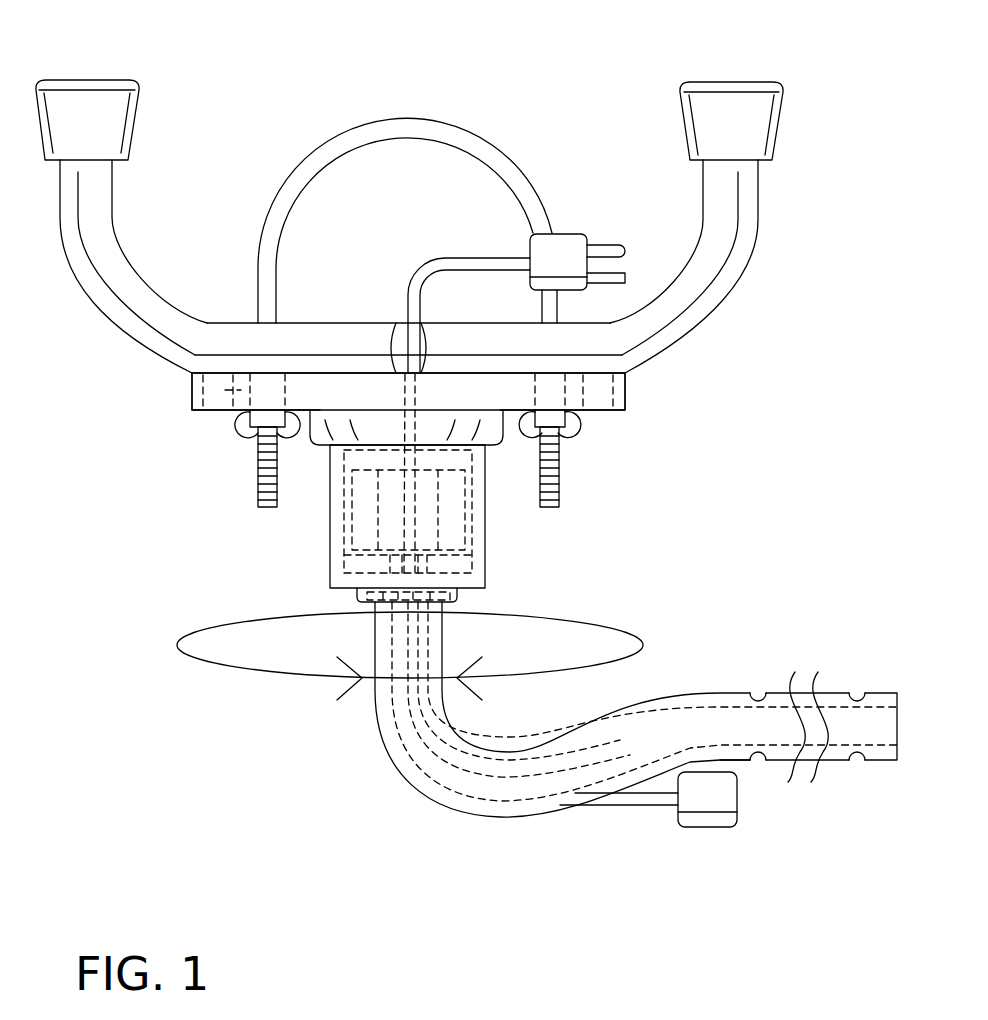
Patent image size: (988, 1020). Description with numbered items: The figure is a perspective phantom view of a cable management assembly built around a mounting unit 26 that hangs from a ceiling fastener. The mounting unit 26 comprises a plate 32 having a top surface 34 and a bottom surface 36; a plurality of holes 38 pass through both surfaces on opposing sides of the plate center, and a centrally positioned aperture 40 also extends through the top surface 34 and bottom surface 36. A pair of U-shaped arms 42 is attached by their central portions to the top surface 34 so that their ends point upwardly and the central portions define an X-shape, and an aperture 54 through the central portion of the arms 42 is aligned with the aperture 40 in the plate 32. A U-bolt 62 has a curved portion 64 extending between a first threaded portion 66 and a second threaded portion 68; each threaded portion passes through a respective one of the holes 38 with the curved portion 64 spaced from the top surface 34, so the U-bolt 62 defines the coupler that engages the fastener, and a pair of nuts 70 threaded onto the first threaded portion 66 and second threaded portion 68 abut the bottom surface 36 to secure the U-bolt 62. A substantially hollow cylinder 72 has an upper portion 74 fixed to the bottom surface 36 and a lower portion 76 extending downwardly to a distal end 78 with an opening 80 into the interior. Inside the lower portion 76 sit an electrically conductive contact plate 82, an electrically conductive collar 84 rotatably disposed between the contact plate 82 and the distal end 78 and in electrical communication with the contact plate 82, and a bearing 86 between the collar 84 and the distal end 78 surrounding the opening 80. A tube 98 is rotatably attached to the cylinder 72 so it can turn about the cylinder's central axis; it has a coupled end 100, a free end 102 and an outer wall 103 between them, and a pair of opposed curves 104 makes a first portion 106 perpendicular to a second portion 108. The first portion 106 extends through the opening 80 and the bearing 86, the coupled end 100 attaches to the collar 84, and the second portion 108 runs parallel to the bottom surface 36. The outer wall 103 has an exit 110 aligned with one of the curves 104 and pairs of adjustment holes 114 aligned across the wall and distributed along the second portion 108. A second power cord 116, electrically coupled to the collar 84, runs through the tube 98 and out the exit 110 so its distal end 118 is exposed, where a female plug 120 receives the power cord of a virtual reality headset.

The mounting unit 26 is at (157, 387).
The plate 32 is at (582, 400).
The top surface 34 is at (617, 340).
The bottom surface 36 is at (203, 412).
The holes 38 is at (248, 392).
The aperture 40 is at (405, 390).
The arms 42 is at (88, 297).
The aperture 54 is at (395, 338).
The U-bolt 62 is at (275, 202).
The curved portion 64 is at (483, 133).
The first threaded portion 66 is at (258, 478).
The second threaded portion 68 is at (560, 485).
The nuts 70 is at (530, 422).
The cylinder 72 is at (330, 568).
The upper portion 74 is at (473, 407).
The lower portion 76 is at (327, 595).
The distal end 78 is at (488, 613).
The opening 80 is at (395, 578).
The contact plate 82 is at (366, 490).
The collar 84 is at (350, 530).
The bearing 86 is at (470, 565).
The tube 98 is at (723, 693).
The coupled end 100 is at (377, 585).
The free end 102 is at (897, 700).
The outer wall 103 is at (463, 812).
The curves 104 is at (660, 698).
The first portion 106 is at (444, 643).
The second portion 108 is at (870, 765).
The exit 110 is at (562, 778).
The pairs of adjustment holes 114 is at (857, 680).
The second power cord 116 is at (636, 806).
The distal end 118 is at (663, 806).
The female plug 120 is at (717, 827).